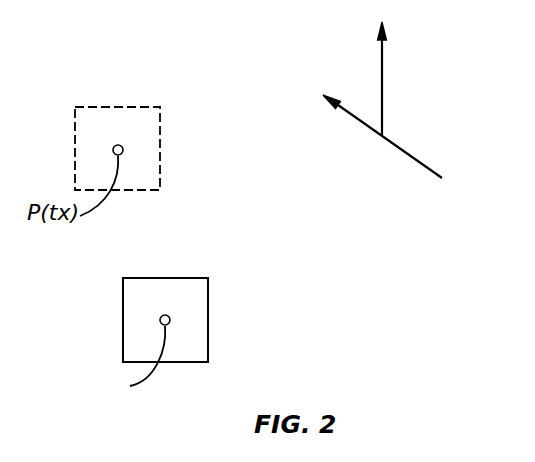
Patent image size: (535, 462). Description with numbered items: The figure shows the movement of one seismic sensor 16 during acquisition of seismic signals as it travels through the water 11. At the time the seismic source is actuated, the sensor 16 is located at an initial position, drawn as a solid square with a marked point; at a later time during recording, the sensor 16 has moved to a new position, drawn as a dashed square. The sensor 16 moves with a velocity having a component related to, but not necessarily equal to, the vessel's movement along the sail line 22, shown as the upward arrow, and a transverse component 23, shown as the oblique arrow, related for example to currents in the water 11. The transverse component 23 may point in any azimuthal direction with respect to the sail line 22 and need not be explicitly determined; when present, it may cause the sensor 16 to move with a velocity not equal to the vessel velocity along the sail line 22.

The water 11 is at (488, 293).
The sensor 16 is at (208, 318).
The sail line 22 is at (382, 72).
The transverse component 23 is at (418, 162).